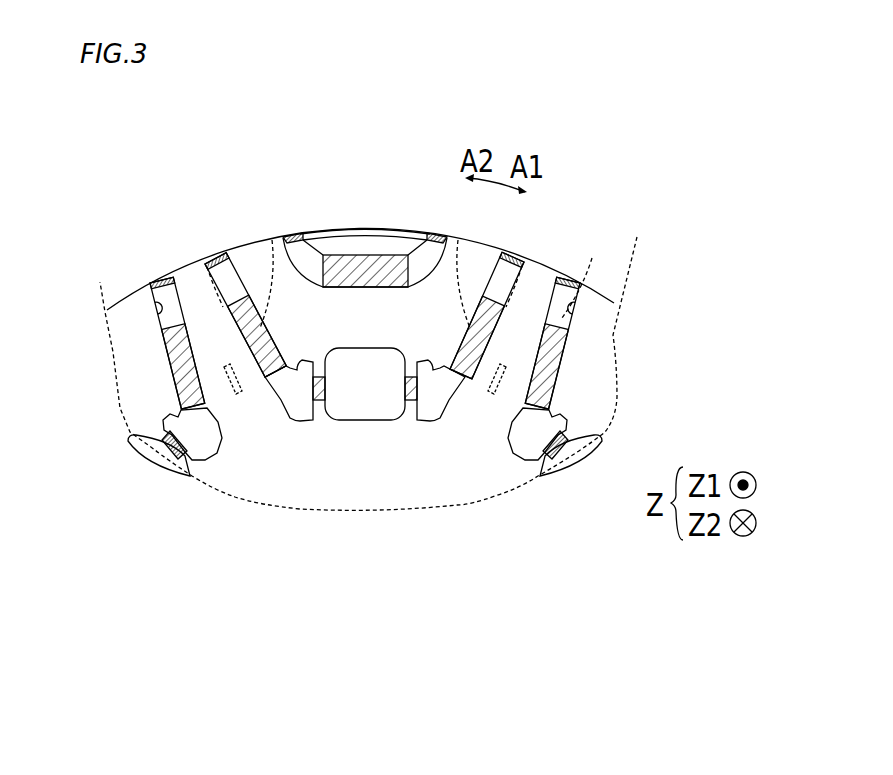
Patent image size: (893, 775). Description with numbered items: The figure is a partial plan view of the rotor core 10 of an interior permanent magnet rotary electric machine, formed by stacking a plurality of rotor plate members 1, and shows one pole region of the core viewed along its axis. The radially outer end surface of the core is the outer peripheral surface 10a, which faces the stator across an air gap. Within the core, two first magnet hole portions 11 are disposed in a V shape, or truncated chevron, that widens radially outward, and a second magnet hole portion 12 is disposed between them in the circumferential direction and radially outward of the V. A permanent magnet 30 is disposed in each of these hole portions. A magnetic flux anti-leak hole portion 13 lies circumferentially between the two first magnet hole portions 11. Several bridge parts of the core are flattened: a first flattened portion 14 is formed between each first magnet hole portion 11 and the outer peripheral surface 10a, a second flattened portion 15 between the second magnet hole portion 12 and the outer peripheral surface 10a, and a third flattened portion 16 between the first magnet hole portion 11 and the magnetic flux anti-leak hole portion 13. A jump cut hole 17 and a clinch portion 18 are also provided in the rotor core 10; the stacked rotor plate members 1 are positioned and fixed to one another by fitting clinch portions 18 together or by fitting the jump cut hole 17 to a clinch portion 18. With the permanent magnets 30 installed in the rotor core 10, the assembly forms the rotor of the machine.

The rotor plate member 1 is at (278, 460).
The rotor core 10 is at (102, 157).
The outer peripheral surface 10a is at (368, 229).
The first magnet hole portion 11 is at (153, 306).
The second magnet hole portion 12 is at (427, 284).
The magnetic flux anti-leak hole portion 13 is at (357, 417).
The first flattened portion 14 is at (107, 307).
The second flattened portion 15 is at (290, 238).
The third flattened portion 16 is at (302, 418).
The jump cut hole 17 is at (240, 392).
The clinch portion 18 is at (365, 445).
The permanent magnet 30 is at (665, 329).